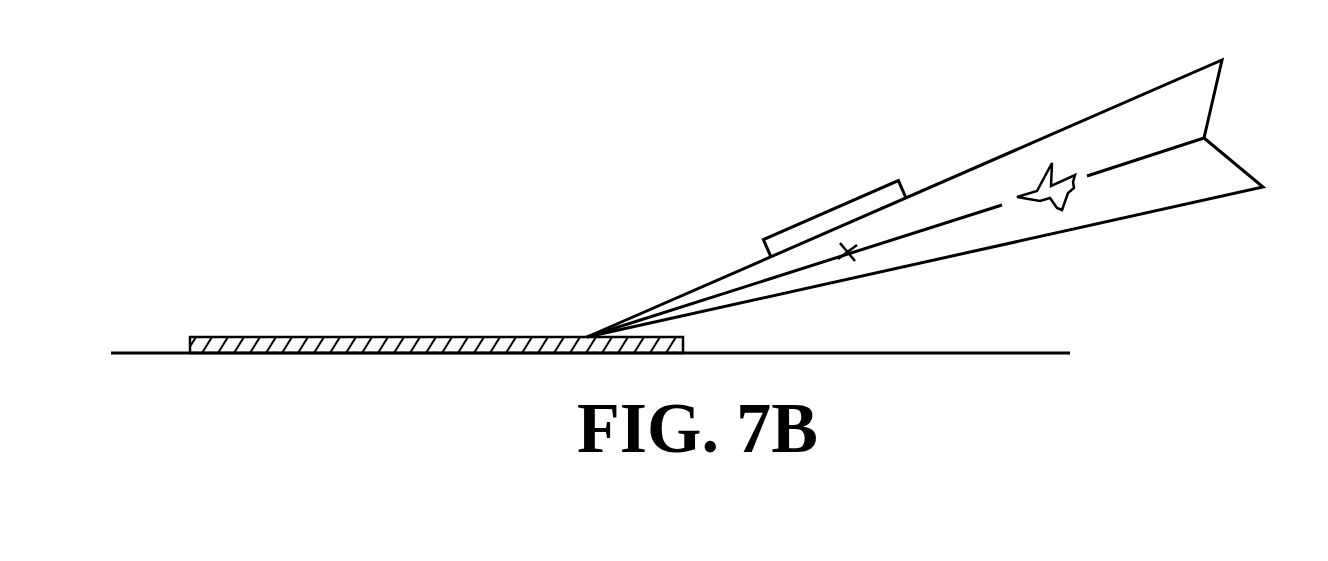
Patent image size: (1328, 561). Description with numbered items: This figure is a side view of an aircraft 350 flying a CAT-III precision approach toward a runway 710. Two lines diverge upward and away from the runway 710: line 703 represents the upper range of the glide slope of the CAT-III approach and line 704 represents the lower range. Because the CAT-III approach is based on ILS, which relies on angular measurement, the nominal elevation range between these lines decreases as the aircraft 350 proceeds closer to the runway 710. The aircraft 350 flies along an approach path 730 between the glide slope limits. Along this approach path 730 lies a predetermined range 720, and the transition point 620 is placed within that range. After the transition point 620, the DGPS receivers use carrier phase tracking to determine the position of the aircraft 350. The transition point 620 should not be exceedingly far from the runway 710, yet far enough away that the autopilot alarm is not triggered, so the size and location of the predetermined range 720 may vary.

The runway 710 is at (458, 337).
The upper range of glide slope 703 is at (1170, 80).
The lower range of glide slope 704 is at (1202, 201).
The approach path 730 is at (1204, 138).
The predetermined range 720 is at (828, 205).
The transition point 620 is at (848, 257).
The aircraft 350 is at (1035, 178).